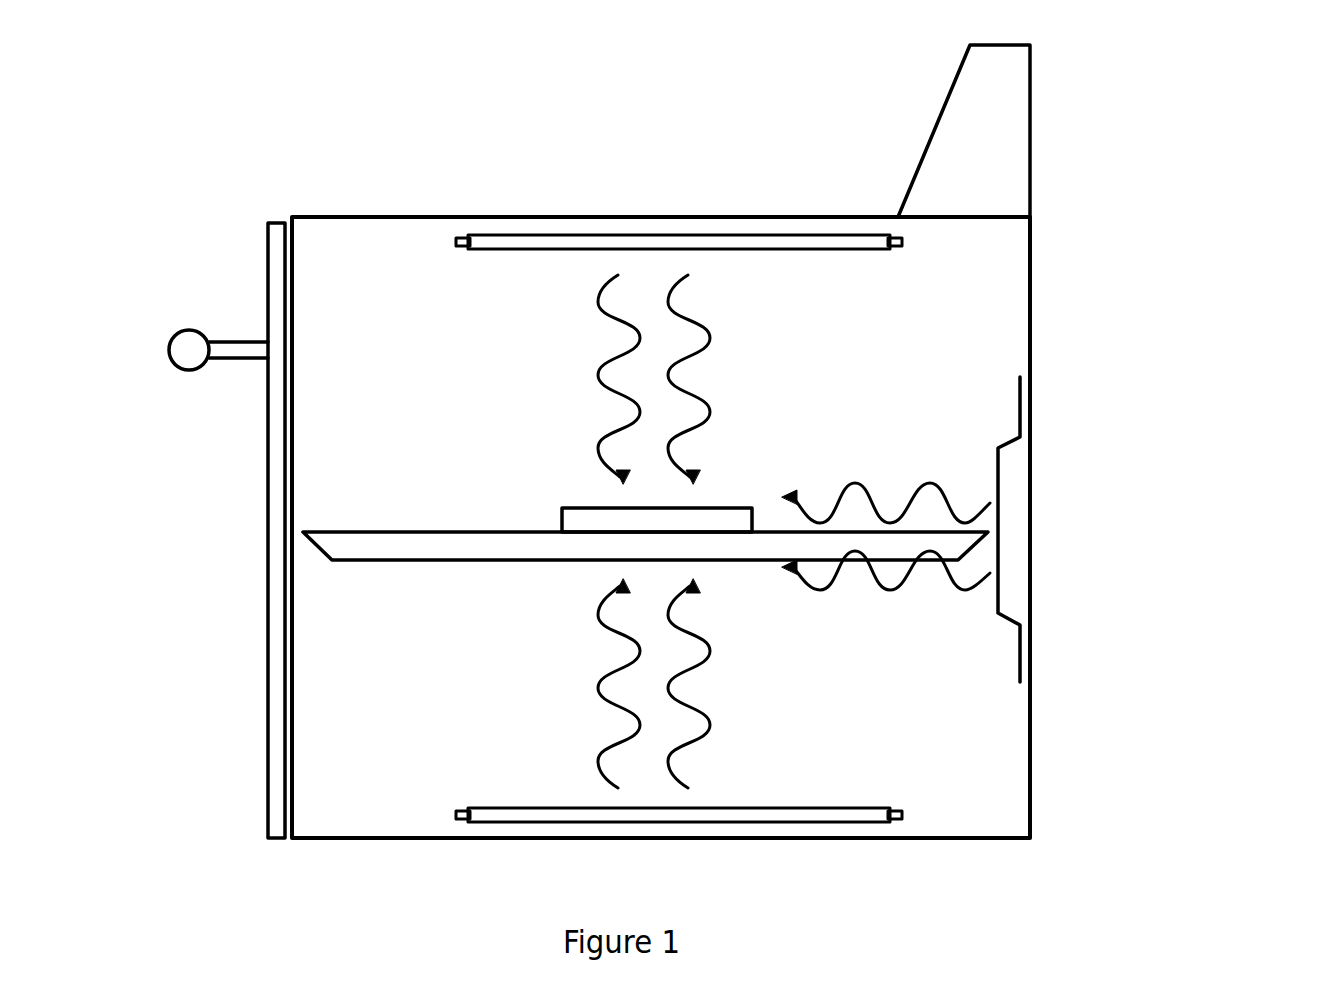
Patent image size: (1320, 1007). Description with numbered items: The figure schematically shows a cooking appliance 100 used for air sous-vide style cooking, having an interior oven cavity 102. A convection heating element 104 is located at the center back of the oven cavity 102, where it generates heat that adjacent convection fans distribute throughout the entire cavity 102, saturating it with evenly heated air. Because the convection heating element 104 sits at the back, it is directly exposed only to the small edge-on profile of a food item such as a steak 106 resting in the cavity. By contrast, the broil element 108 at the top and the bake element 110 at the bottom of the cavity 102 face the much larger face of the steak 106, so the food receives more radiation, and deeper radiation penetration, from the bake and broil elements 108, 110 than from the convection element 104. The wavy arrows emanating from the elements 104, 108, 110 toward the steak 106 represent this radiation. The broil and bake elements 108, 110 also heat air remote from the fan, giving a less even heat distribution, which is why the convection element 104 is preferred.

The cooking appliance 100 is at (718, 441).
The oven cavity 102 is at (913, 358).
The convection heating element 104 is at (983, 529).
The steak 106 is at (595, 481).
The broil element 108 is at (664, 163).
The bake element 110 is at (625, 870).